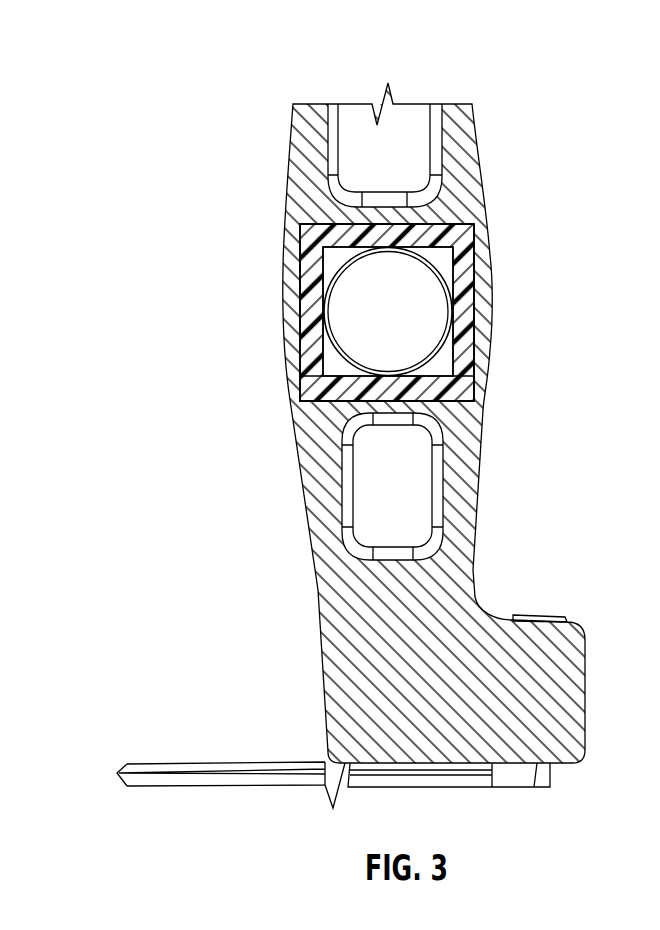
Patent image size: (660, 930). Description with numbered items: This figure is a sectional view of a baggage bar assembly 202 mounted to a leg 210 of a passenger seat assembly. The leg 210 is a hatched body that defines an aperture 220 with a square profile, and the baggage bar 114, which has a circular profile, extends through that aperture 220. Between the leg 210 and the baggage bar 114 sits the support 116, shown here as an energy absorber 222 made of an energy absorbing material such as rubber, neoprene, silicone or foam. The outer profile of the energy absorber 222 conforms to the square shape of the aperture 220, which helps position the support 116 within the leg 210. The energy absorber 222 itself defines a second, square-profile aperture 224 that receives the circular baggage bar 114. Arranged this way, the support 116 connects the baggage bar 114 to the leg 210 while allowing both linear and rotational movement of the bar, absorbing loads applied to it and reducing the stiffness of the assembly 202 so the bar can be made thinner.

The baggage bar assembly 202 is at (219, 140).
The leg 210 is at (462, 180).
The aperture 220 is at (480, 318).
The energy absorber 222 is at (475, 388).
The aperture 224 is at (325, 255).
The baggage bar 114 is at (327, 277).
The support 116 is at (315, 388).